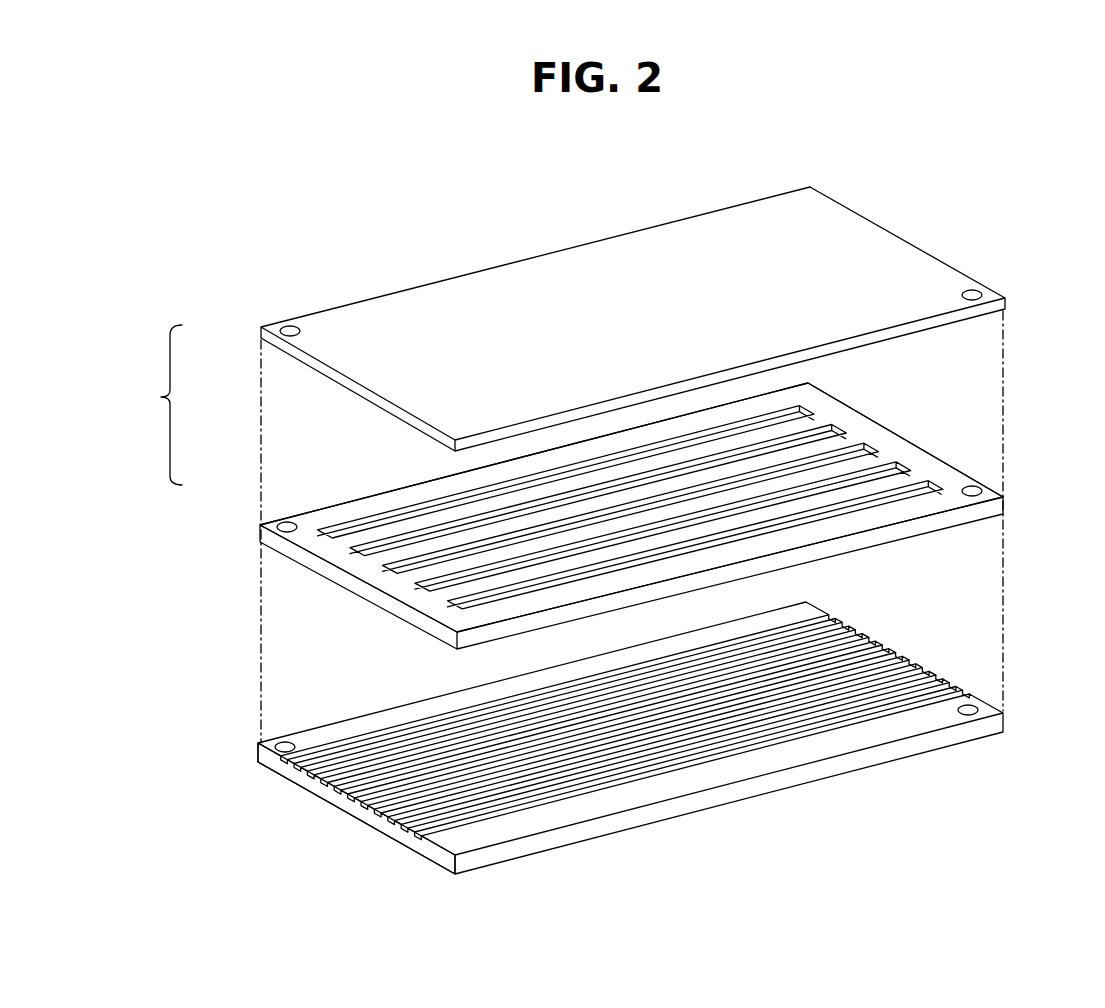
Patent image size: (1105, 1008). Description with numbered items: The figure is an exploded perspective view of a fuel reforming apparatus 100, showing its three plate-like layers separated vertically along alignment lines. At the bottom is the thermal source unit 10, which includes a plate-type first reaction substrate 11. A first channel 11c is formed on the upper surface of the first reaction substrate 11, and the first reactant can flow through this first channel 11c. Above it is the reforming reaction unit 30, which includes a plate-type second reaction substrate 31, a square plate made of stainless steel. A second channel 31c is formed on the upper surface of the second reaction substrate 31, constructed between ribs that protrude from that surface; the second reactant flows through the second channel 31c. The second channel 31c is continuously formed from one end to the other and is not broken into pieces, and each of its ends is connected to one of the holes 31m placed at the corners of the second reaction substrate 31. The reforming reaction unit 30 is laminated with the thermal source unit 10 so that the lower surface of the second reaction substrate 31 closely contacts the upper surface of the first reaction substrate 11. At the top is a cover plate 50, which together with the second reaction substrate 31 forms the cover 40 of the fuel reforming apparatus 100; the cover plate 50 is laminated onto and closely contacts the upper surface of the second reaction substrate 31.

The fuel reforming apparatus 100 is at (581, 177).
The thermal source unit 10 is at (244, 755).
The first reaction substrate 11 is at (378, 827).
The first channel 11c is at (367, 738).
The reforming reaction unit 30 is at (244, 536).
The second reaction substrate 31 is at (257, 522).
The second channel 31c is at (384, 503).
The holes 31m is at (289, 519).
The cover 40 is at (154, 405).
The cover plate 50 is at (260, 332).